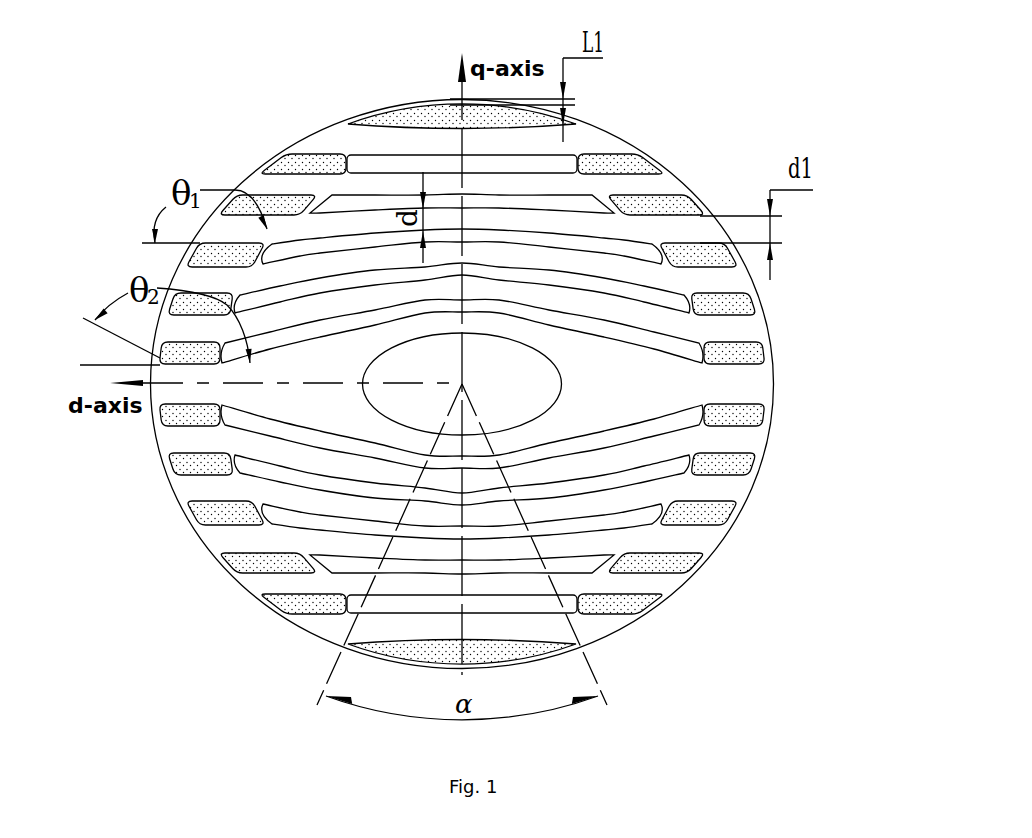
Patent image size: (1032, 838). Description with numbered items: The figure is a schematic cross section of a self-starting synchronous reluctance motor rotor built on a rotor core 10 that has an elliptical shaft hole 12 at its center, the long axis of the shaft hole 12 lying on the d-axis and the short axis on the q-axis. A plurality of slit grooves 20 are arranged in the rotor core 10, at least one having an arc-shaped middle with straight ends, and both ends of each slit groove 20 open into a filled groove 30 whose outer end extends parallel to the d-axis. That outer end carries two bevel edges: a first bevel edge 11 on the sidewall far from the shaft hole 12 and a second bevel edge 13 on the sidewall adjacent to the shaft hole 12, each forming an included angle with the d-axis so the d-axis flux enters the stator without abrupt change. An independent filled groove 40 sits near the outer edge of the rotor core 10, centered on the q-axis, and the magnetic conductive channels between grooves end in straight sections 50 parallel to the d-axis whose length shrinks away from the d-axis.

The rotor core 10 is at (660, 183).
The first bevel edge 11 is at (278, 224).
The shaft hole 12 is at (413, 406).
The second bevel edge 13 is at (226, 342).
The slit groove 20 is at (460, 384).
The filled groove 30 is at (712, 360).
The independent filled groove 40 is at (362, 123).
The straight section 50 is at (238, 538).